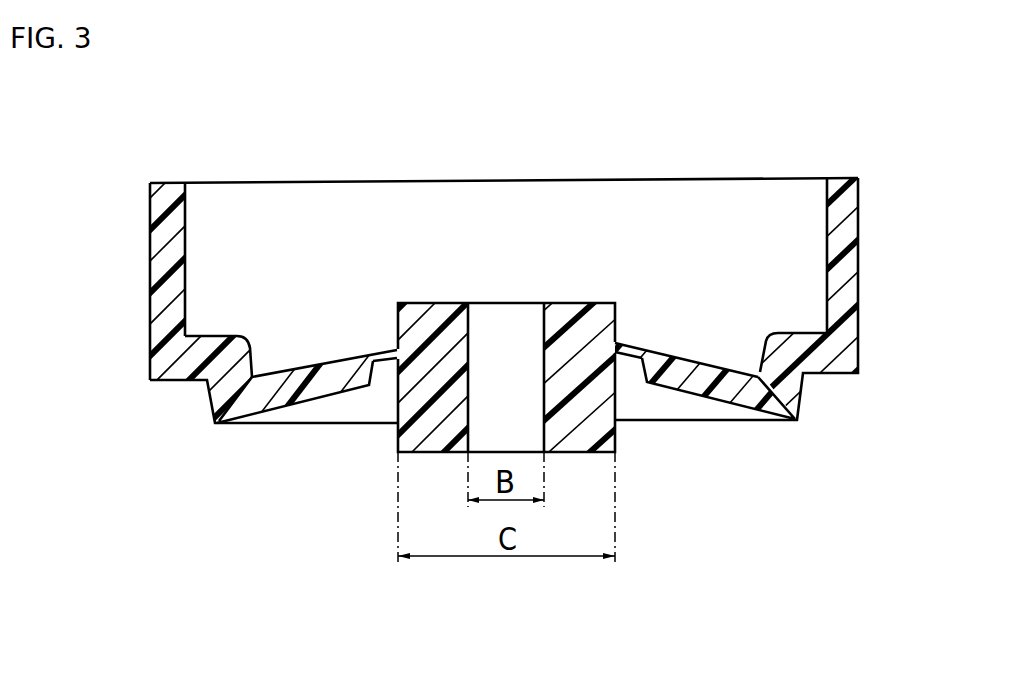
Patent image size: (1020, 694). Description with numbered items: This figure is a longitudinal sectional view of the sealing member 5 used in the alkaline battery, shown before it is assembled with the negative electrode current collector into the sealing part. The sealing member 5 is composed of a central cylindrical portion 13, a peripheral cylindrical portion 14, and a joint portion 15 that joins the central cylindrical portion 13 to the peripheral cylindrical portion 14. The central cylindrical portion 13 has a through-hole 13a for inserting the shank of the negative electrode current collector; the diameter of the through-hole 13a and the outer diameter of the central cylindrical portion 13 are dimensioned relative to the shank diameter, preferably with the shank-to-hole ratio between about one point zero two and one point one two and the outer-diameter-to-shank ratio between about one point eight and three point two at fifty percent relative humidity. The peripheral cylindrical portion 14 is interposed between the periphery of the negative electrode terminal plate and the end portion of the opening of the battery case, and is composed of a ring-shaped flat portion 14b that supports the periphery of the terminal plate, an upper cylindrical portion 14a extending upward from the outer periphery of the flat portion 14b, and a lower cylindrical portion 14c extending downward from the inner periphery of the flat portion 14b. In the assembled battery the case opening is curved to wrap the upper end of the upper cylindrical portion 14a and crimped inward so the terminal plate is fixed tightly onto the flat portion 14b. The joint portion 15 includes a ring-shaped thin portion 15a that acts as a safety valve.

The sealing member 5 is at (569, 172).
The central cylindrical portion 13 is at (431, 318).
The through-hole 13a is at (520, 322).
The peripheral cylindrical portion 14 is at (153, 313).
The upper cylindrical portion 14a is at (163, 241).
The ring-shaped flat portion 14b is at (207, 347).
The lower cylindrical portion 14c is at (222, 392).
The joint portion 15 is at (318, 386).
The ring-shaped thin portion 15a is at (395, 348).